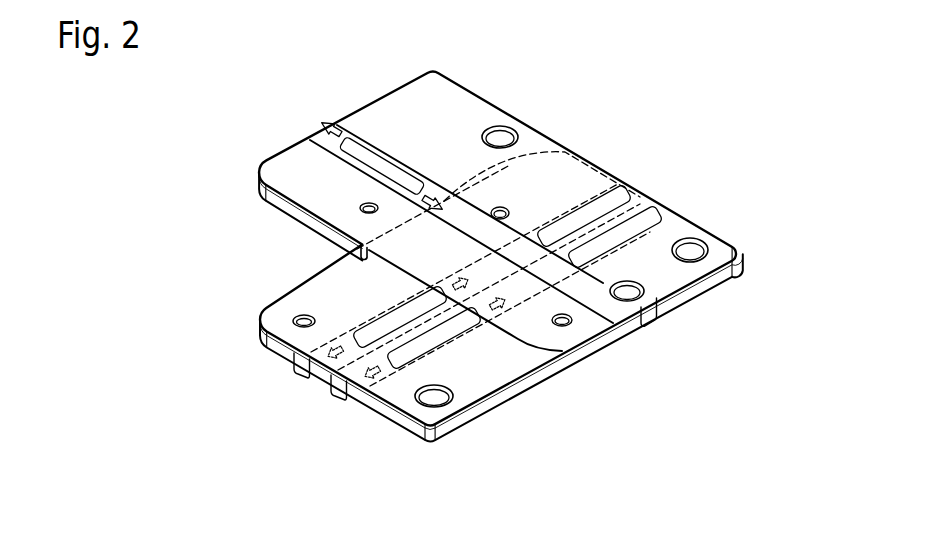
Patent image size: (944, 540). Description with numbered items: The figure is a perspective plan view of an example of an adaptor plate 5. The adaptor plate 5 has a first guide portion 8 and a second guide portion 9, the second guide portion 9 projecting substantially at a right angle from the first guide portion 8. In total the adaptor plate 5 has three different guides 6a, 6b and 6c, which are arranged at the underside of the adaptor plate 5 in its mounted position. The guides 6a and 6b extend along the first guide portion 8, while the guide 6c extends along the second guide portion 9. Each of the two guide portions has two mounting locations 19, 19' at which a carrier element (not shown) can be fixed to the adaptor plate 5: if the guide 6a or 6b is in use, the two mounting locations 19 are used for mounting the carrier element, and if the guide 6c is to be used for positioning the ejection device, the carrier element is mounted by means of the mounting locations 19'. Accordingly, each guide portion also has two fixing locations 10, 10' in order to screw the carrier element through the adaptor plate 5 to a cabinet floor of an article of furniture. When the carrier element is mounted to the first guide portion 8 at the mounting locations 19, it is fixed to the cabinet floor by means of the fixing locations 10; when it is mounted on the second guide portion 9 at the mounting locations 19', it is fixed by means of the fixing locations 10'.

The adaptor plate 5 is at (260, 149).
The first guide portion 8 is at (318, 298).
The second guide portion 9 is at (283, 172).
The fixing locations 10 is at (412, 264).
The fixing locations 10' is at (419, 337).
The mounting locations 19 is at (601, 401).
The mounting locations 19' is at (638, 145).
The guide 6a is at (354, 407).
The guide 6b is at (307, 380).
The guide 6c is at (648, 334).